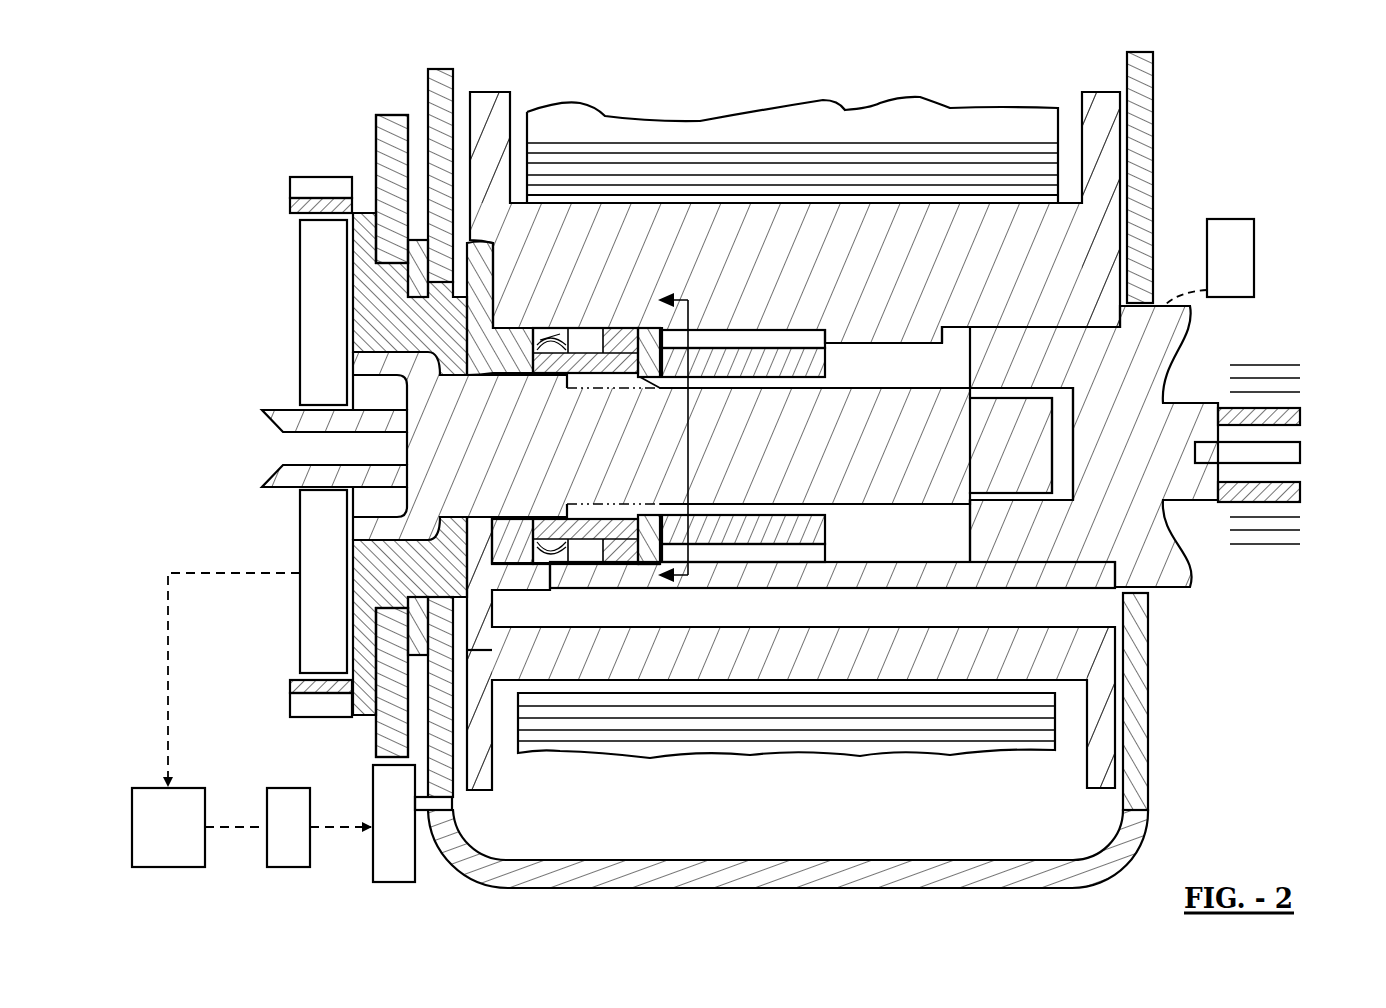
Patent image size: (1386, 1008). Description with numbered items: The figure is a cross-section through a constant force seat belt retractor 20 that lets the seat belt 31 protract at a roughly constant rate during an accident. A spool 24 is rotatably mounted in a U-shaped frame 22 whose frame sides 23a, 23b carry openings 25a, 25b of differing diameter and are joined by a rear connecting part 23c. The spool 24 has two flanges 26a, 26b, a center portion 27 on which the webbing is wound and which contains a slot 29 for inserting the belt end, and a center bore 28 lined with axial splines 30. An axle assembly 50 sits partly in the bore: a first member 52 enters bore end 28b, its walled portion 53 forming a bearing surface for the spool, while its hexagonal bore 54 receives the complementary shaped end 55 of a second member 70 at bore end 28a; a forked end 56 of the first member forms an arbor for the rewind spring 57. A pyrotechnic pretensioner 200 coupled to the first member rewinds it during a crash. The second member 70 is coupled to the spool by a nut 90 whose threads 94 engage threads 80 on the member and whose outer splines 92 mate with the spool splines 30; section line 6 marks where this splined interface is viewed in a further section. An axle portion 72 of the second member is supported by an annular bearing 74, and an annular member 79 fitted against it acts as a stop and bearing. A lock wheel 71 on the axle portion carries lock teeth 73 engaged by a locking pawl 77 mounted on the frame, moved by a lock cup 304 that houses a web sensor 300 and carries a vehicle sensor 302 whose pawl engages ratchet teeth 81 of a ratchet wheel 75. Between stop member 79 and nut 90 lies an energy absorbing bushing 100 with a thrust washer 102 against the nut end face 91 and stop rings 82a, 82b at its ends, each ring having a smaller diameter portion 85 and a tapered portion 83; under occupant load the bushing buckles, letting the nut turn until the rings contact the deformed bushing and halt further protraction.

The constant force retractor 20 is at (192, 112).
The U-shaped frame 22 is at (573, 857).
The frame side 23a is at (446, 786).
The frame side 23b is at (1136, 776).
The rear or connecting part 23c is at (906, 860).
The spool 24 is at (624, 250).
The opening 25a is at (480, 606).
The opening 25b is at (1099, 590).
The flange 26a is at (494, 112).
The flange 26b is at (1099, 120).
The center portion 27 is at (736, 203).
The center bore 28 is at (864, 333).
The bore end 28a is at (509, 328).
The bore end 28b is at (975, 326).
The slot 29 is at (628, 618).
The splines 30 is at (912, 338).
The seat belt 31 is at (890, 102).
The axle assembly 50 is at (298, 445).
The first member 52 is at (1126, 464).
The walled portion 53 is at (1056, 560).
The hexagonal bore 54 is at (1072, 400).
The complementary shaped end 55 is at (1053, 445).
The forked end 56 is at (1302, 420).
The rewind spring 57 is at (1304, 376).
The second member 70 is at (612, 427).
The lock wheel 71 is at (386, 152).
The axle portion 72 is at (376, 556).
The lock teeth 73 is at (398, 135).
The annular bearing 74 is at (416, 622).
The ratchet wheel 75 is at (320, 206).
The locking pawl 77 is at (396, 882).
The annular member 79 is at (511, 541).
The threads 80 is at (785, 392).
The ratchet teeth 81 is at (318, 186).
The stop ring 82a is at (562, 333).
The stop ring 82b is at (645, 328).
The tapered diameter portion 83 is at (585, 446).
The smaller diameter portion 85 is at (500, 309).
The nut 90 is at (712, 352).
The end face 91 is at (660, 392).
The splines 92 is at (772, 340).
The threads 94 is at (700, 392).
The energy absorbing bushing 100 is at (558, 373).
The thrust washer 102 is at (662, 568).
The pyrotechnic pretensioner 200 is at (1228, 226).
The web sensor 300 is at (298, 311).
The vehicle sensor 302 is at (302, 858).
The lock cup 304 is at (170, 852).
The section line 6 is at (685, 441).